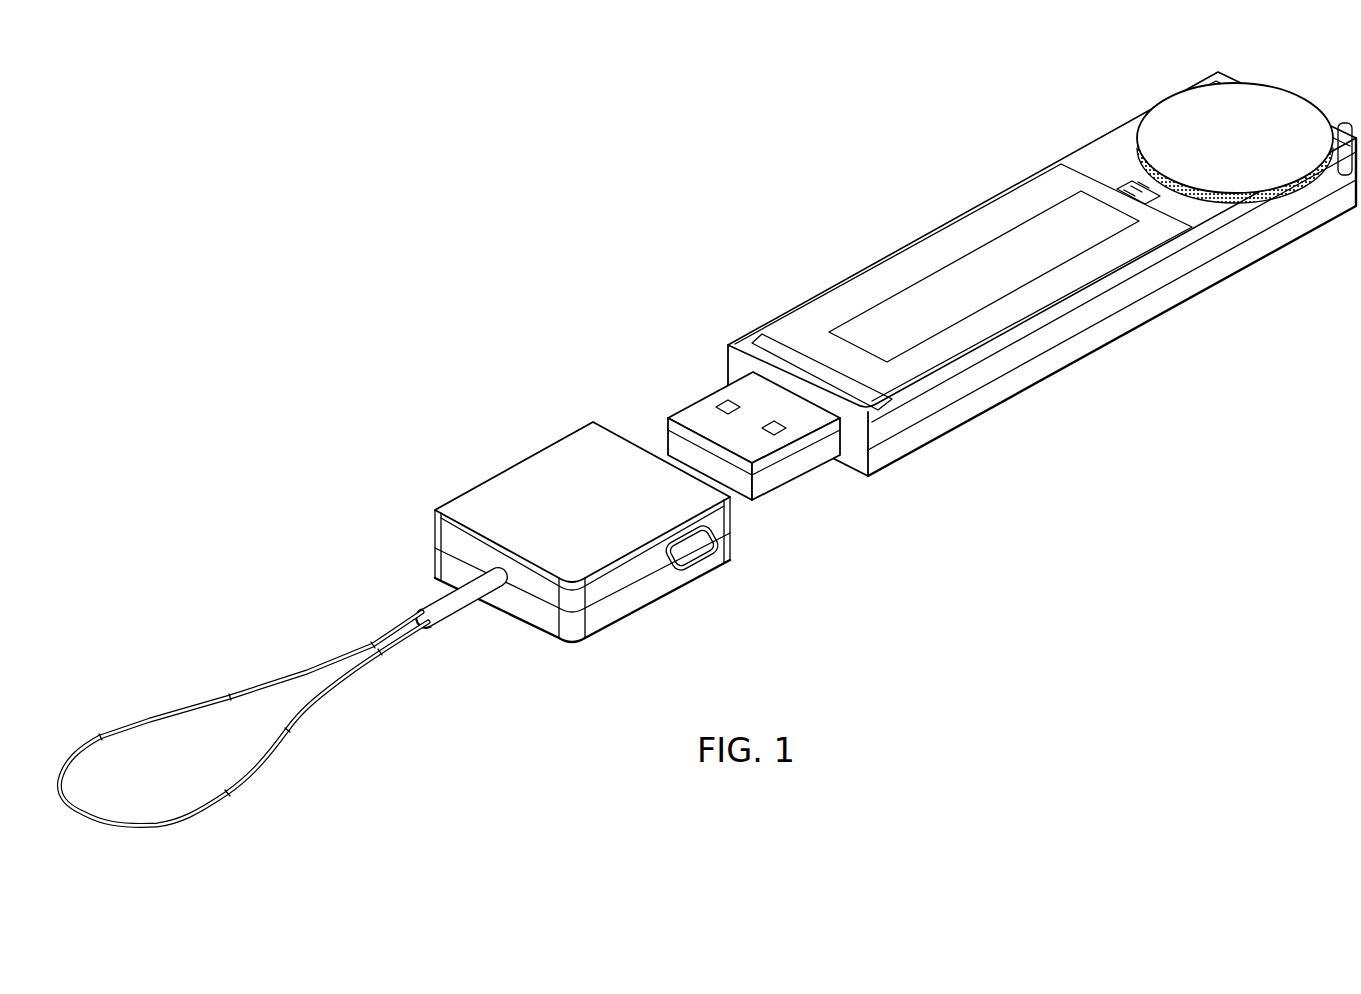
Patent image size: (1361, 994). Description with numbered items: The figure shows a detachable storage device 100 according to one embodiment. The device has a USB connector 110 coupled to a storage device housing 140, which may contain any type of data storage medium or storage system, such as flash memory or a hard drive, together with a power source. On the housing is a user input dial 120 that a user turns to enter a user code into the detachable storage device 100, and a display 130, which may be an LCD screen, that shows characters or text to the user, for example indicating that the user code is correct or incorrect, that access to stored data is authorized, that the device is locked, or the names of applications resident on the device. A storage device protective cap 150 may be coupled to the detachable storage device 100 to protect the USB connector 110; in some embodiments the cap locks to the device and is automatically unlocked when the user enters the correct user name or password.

The detachable storage device 100 is at (957, 272).
The USB connector 110 is at (769, 321).
The user input dial 120 is at (1162, 96).
The display 130 is at (908, 286).
The storage device housing 140 is at (1047, 165).
The storage device protective cap 150 is at (497, 476).